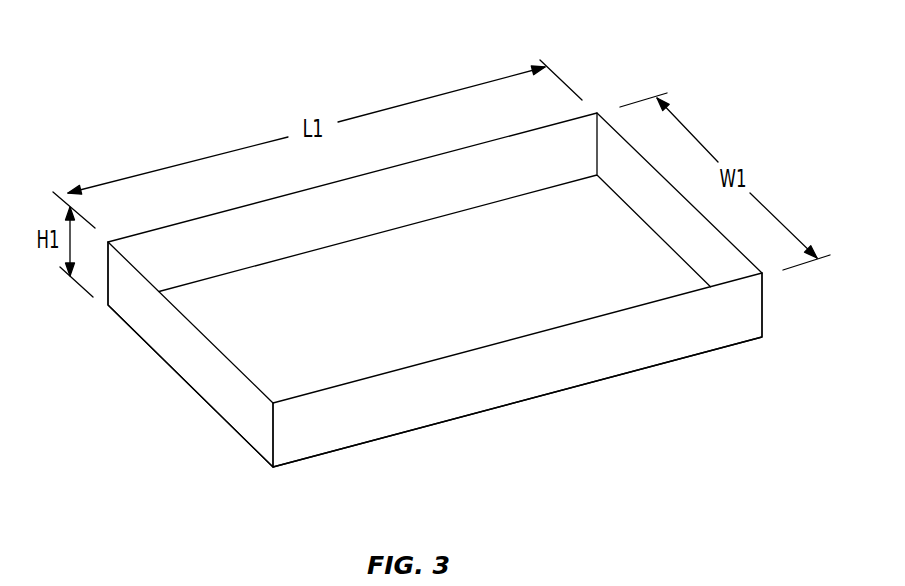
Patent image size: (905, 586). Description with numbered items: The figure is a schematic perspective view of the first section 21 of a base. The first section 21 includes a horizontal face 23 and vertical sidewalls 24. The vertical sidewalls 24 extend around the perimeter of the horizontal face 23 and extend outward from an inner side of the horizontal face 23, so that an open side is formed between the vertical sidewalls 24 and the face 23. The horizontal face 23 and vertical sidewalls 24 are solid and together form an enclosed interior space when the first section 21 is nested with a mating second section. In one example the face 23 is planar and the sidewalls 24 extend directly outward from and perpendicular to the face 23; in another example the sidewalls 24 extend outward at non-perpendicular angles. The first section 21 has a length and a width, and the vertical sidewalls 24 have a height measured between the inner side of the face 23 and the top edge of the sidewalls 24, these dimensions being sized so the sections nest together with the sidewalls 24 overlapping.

The first section 21 is at (429, 254).
The horizontal face 23 is at (326, 290).
The vertical sidewalls 24 is at (303, 442).